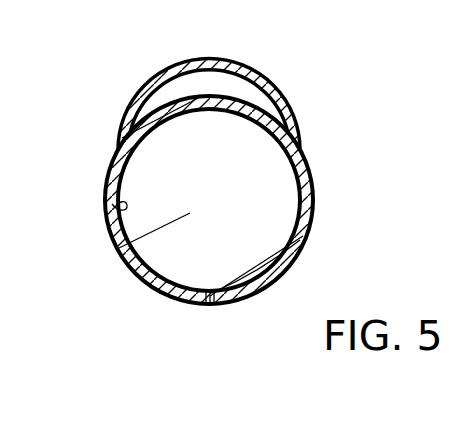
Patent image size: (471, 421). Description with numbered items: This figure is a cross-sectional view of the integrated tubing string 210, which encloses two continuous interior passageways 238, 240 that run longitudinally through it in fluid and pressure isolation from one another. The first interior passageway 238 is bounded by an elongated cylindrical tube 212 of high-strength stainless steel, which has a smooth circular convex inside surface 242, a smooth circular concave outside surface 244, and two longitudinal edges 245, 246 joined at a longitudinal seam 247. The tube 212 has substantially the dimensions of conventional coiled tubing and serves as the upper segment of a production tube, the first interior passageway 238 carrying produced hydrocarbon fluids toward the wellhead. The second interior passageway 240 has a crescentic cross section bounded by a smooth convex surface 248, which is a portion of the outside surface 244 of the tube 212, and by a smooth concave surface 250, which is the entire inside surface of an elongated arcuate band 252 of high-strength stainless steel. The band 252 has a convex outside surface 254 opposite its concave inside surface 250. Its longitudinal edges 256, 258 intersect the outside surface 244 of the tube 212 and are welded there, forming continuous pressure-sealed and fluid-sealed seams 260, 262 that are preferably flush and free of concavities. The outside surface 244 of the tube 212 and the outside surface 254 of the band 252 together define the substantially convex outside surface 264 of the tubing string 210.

The tubing string 210 is at (310, 210).
The tube 212 is at (309, 241).
The first interior passageway 238 is at (117, 249).
The second interior passageway 240 is at (213, 87).
The inside surface 242 is at (112, 204).
The outside surface 244 is at (292, 272).
The longitudinal edge 245 is at (213, 305).
The longitudinal edge 246 is at (205, 303).
The longitudinal seam 247 is at (213, 293).
The convex surface 248 is at (156, 110).
The concave surface 250 is at (160, 80).
The arcuate band 252 is at (286, 103).
The convex outside surface 254 is at (267, 82).
The longitudinal edge 256 is at (302, 146).
The longitudinal edge 258 is at (118, 142).
The seam 260 is at (305, 147).
The seam 262 is at (118, 150).
The outside surface 264 is at (141, 283).